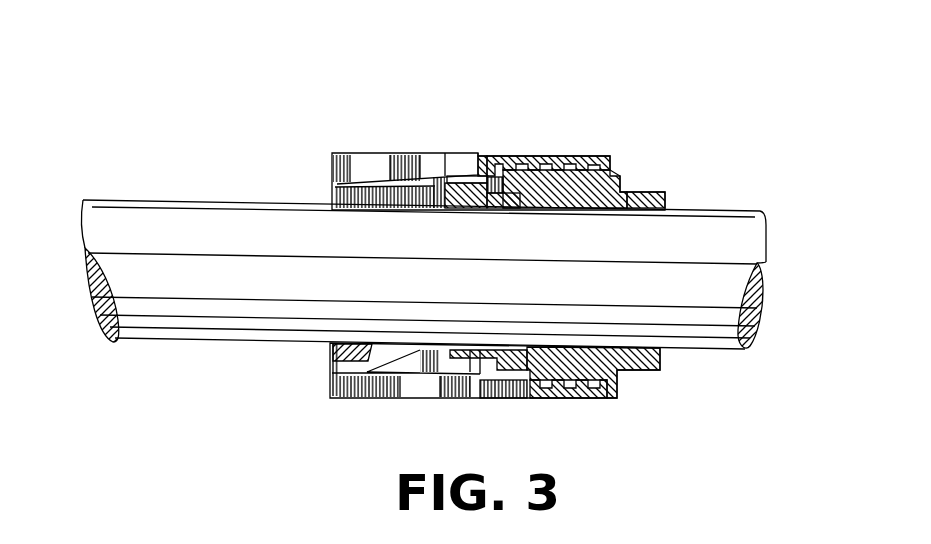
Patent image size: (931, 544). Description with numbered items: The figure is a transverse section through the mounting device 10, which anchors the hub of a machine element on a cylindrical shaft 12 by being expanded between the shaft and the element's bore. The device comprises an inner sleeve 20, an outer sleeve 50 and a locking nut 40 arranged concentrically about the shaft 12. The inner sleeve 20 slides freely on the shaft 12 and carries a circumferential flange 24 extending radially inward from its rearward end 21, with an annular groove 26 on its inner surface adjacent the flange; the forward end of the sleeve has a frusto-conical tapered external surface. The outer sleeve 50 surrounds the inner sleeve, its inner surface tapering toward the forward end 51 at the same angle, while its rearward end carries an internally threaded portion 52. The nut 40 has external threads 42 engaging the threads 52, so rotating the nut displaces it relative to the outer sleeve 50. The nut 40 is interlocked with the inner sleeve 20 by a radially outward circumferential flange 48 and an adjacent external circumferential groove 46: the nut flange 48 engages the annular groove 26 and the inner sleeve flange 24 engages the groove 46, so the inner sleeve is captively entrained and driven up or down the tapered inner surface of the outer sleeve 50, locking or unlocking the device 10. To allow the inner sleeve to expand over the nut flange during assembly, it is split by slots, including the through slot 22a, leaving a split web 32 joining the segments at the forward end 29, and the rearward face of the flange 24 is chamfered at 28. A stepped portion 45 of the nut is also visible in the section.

The mounting device 10 is at (336, 130).
The cylindrical shaft 12 is at (207, 223).
The inner sleeve 20 is at (445, 153).
The rearward or proximal end of the inner sleeve 21 is at (544, 370).
The through slot 22a is at (388, 182).
The circumferential flange 24 is at (521, 156).
The annular groove 26 is at (480, 158).
The chamfer 28 is at (545, 206).
The forward end of the inner sleeve 29 is at (334, 191).
The split web 32 is at (331, 355).
The locking nut 40 is at (618, 174).
The external threads 42 is at (612, 372).
The flange 45 is at (632, 192).
The external circumferential groove 46 is at (506, 196).
The external circumferential flange 48 is at (474, 196).
The outer sleeve 50 is at (383, 398).
The forward or distal end of the outer sleeve 51 is at (331, 387).
The threaded portion 52 is at (570, 399).